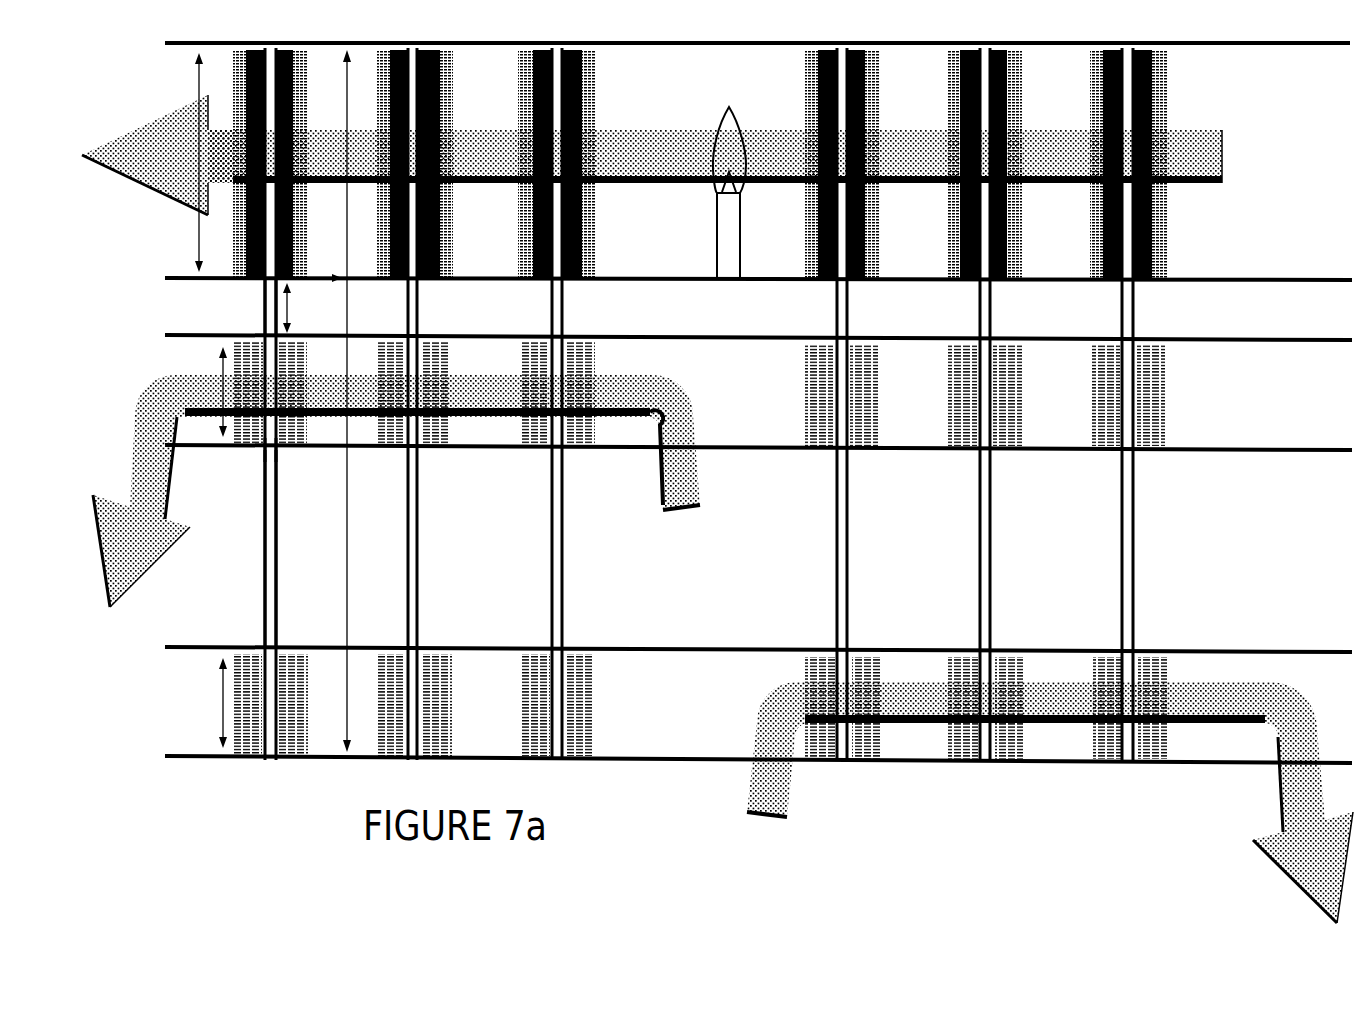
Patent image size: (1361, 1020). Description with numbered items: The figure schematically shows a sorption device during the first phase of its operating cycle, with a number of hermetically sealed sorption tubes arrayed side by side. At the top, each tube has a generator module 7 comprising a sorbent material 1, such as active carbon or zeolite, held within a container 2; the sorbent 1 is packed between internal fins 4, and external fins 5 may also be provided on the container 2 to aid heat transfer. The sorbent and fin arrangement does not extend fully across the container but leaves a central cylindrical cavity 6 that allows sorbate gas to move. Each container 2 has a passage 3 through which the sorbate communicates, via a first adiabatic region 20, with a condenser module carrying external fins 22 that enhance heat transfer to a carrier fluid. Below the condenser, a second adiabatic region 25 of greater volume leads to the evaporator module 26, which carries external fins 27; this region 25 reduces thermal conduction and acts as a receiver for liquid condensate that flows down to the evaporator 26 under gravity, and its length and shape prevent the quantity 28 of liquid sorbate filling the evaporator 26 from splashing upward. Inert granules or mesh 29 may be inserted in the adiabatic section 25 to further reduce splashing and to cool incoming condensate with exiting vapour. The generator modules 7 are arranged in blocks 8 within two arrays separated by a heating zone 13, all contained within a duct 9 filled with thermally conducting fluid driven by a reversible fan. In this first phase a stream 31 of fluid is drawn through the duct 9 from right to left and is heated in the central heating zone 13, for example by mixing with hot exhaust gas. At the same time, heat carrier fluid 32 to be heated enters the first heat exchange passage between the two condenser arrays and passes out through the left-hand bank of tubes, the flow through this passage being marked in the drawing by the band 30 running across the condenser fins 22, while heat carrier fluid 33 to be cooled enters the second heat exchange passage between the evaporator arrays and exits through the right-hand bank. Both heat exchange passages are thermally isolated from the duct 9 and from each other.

The sorbent material 1 is at (338, 281).
The container 2 is at (757, 43).
The passage 3 is at (258, 289).
The internal fins 4 is at (305, 80).
The external fins 5 is at (715, 155).
The central cylindrical cavity 6 is at (341, 401).
The generator module 7 is at (205, 156).
The block 8 is at (725, 26).
The duct 9 is at (204, 162).
The heating zone 13 is at (742, 192).
The adiabatic region 20 is at (298, 308).
The external fins 22 is at (297, 380).
The second adiabatic region 25 is at (285, 549).
The evaporator module 26 is at (213, 703).
The external fins 27 is at (303, 735).
The quantity of liquid sorbate 28 is at (307, 667).
The inert granules or mesh 29 is at (280, 452).
The middle layer flow band 30 is at (424, 457).
The stream 31 is at (157, 155).
The heat carrier fluid 32 is at (396, 491).
The heat carrier fluid 33 is at (1050, 802).